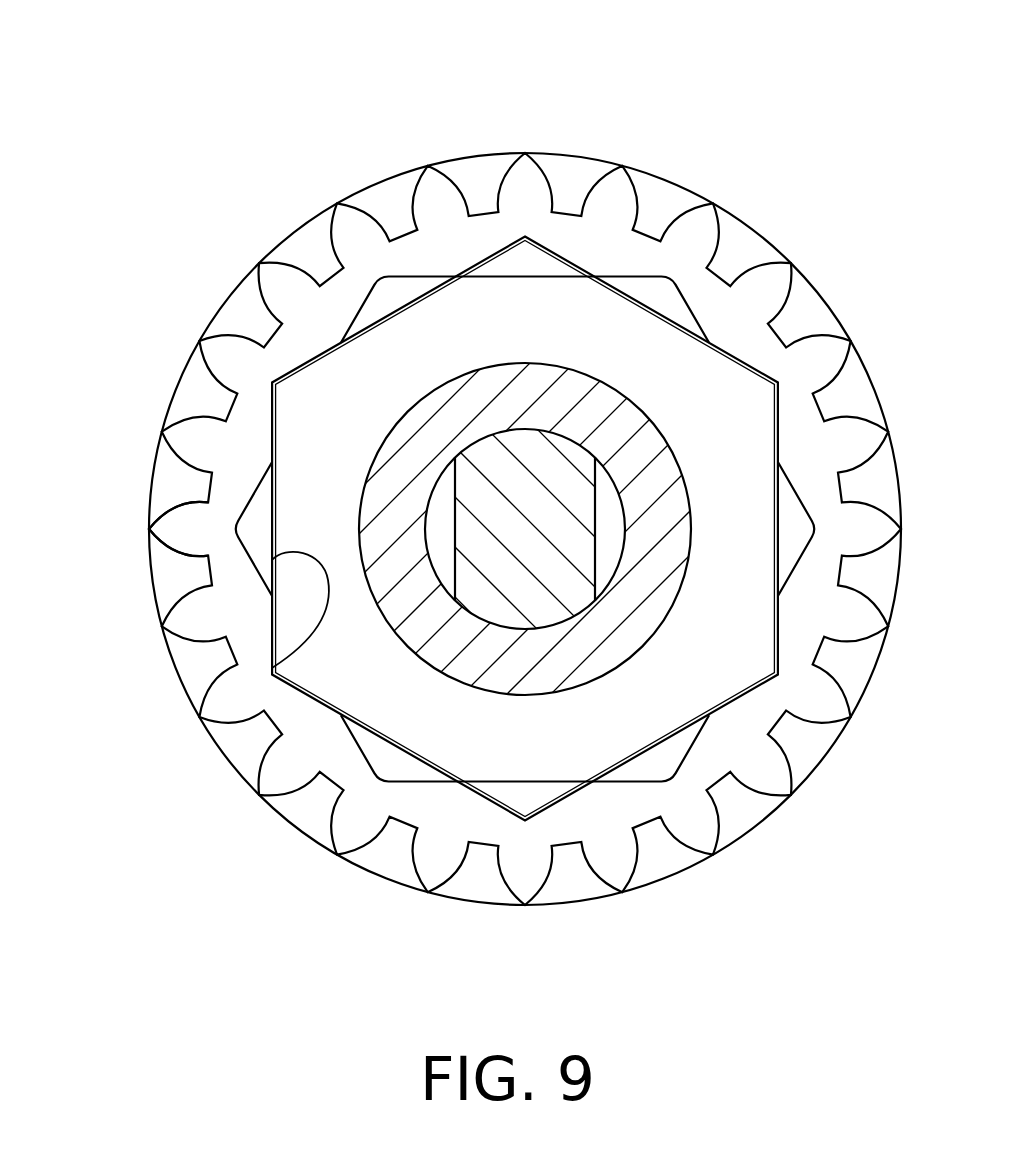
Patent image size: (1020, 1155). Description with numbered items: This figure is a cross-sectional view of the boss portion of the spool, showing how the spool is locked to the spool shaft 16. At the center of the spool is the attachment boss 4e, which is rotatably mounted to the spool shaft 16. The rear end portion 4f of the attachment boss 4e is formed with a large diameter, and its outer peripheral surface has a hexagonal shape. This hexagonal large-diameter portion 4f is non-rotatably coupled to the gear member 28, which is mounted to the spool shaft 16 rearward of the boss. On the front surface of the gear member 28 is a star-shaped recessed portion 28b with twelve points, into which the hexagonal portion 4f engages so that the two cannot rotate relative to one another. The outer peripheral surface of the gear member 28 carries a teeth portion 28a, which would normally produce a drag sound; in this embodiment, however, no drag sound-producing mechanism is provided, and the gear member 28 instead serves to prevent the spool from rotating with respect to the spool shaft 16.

The spool shaft 16 is at (492, 470).
The attachment boss 4e is at (360, 285).
The rear end portion of the attachment boss 4f is at (350, 330).
The gear member 28 is at (773, 205).
The teeth portion 28a is at (181, 503).
The star-shaped recessed portion 28b is at (272, 668).